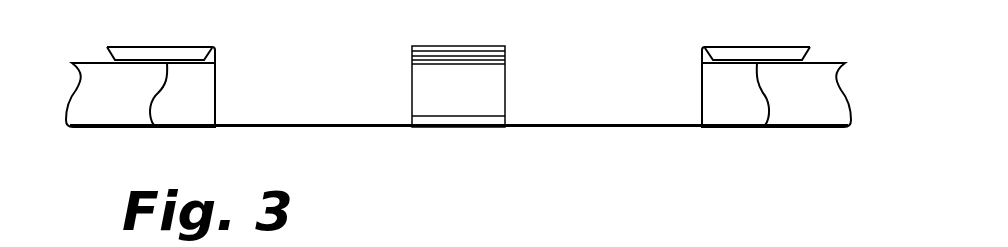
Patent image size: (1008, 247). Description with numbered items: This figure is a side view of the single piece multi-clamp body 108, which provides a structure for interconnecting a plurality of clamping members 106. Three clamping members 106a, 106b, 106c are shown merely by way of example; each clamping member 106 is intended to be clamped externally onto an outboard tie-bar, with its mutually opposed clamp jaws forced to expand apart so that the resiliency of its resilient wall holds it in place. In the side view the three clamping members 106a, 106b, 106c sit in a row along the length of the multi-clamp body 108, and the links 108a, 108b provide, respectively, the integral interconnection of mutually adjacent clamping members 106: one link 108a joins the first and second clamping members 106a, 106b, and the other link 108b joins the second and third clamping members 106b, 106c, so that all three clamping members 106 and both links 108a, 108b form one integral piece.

The clamping member 106 is at (217, 88).
The clamping member 106a is at (217, 63).
The clamping member 106b is at (505, 72).
The clamping member 106c is at (700, 63).
The multi-clamp body 108 is at (378, 138).
The link 108a is at (340, 124).
The link 108b is at (605, 123).